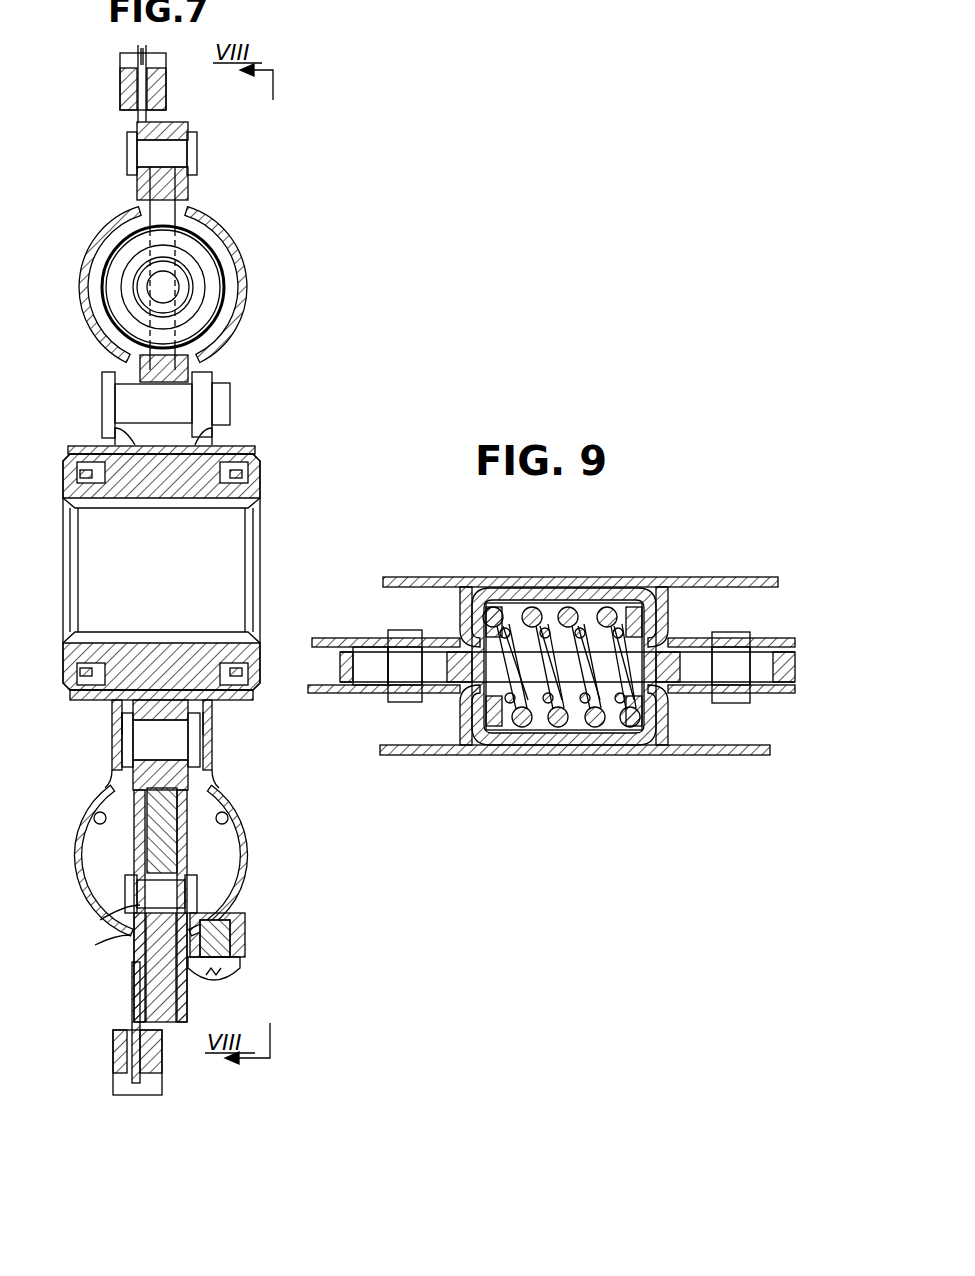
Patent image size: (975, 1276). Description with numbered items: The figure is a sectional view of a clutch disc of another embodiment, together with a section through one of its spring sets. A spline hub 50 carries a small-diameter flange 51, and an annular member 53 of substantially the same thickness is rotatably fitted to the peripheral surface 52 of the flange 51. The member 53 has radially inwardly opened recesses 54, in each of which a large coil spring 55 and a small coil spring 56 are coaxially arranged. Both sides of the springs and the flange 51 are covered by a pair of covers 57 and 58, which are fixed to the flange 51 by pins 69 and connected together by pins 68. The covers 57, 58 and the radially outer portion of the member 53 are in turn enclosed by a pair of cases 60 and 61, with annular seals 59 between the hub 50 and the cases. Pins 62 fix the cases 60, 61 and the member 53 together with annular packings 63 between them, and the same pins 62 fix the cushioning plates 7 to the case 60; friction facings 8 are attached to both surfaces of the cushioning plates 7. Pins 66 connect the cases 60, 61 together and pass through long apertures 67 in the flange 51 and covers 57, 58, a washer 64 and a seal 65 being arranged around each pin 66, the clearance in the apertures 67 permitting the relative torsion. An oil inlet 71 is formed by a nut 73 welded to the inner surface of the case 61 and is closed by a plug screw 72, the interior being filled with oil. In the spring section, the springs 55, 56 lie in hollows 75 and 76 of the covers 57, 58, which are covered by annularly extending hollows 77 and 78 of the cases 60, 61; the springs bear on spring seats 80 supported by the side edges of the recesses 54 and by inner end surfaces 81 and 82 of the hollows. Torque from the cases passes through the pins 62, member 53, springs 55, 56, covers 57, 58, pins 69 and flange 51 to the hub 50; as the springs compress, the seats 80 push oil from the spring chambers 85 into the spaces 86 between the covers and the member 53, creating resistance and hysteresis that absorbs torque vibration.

In FIG. 7, the cushioning plates 7 is at (137, 118).
In FIG. 7, the friction facings 8 is at (130, 94).
In FIG. 7, the spline hub 50 is at (168, 496).
In FIG. 7, the flange 51 is at (215, 375).
In FIG. 7, the peripheral surface 52 is at (190, 350).
In FIG. 7, the annular member 53 is at (170, 195).
In FIG. 9, the annular member 53 is at (340, 665).
In FIG. 7, the recesses 54 is at (140, 205).
In FIG. 9, the recesses 54 is at (460, 700).
In FIG. 7, the coil spring 55 is at (213, 310).
In FIG. 9, the coil spring 55 is at (550, 610).
In FIG. 7, the coil spring 56 is at (195, 290).
In FIG. 9, the coil spring 56 is at (572, 605).
In FIG. 7, the cover 57 is at (100, 238).
In FIG. 9, the cover 57 is at (325, 693).
In FIG. 7, the cover 58 is at (240, 222).
In FIG. 9, the cover 58 is at (335, 638).
In FIG. 7, the annular seals 59 is at (95, 662).
In FIG. 7, the case 60 is at (84, 282).
In FIG. 9, the case 60 is at (418, 755).
In FIG. 7, the case 61 is at (247, 240).
In FIG. 9, the case 61 is at (410, 577).
In FIG. 7, the pins 62 is at (197, 153).
In FIG. 7, the annular packings 63 is at (160, 126).
In FIG. 7, the washer 64 is at (220, 440).
In FIG. 7, the seal 65 is at (102, 388).
In FIG. 7, the pins 66 is at (230, 415).
In FIG. 7, the long apertures 67 is at (150, 414).
In FIG. 7, the pins 68 is at (127, 900).
In FIG. 9, the pins 68 is at (735, 632).
In FIG. 7, the pins 69 is at (200, 738).
In FIG. 7, the oil inlet 71 is at (230, 945).
In FIG. 7, the plug screw 72 is at (235, 975).
In FIG. 7, the nut 73 is at (240, 930).
In FIG. 9, the hollow 75 is at (560, 745).
In FIG. 7, the hollow 76 is at (110, 935).
In FIG. 9, the hollow 76 is at (525, 600).
In FIG. 7, the hollow 77 is at (80, 820).
In FIG. 9, the hollow 77 is at (385, 735).
In FIG. 7, the hollow 78 is at (232, 823).
In FIG. 9, the hollow 78 is at (378, 600).
In FIG. 9, the spring seats 80 is at (476, 595).
In FIG. 9, the inner end surface 81 is at (478, 745).
In FIG. 9, the inner end surface 82 is at (462, 600).
In FIG. 9, the spring chambers 85 is at (590, 610).
In FIG. 9, the spaces 86 is at (435, 650).